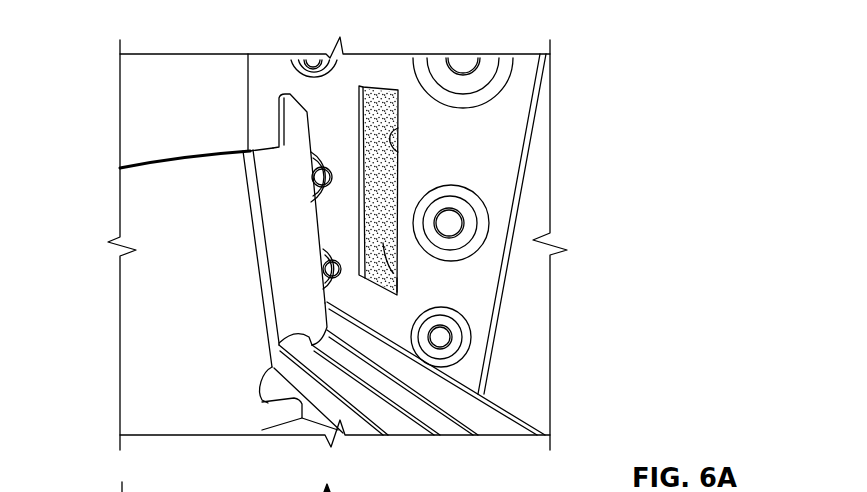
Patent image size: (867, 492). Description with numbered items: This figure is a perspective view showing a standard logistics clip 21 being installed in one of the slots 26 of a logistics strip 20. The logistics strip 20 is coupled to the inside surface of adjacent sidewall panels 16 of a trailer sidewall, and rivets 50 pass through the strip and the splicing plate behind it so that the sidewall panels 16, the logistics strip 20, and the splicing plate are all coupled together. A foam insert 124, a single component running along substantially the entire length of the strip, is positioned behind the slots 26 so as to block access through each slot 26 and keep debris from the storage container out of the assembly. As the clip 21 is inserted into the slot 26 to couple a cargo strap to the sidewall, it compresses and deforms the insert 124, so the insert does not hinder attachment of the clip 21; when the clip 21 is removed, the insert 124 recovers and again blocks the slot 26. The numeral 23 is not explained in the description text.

The sidewall panel 16 is at (522, 377).
The logistics strip 20 is at (497, 172).
The logistics clip 21 is at (273, 146).
The panel 23 is at (145, 297).
The slot 26 is at (398, 130).
The rivet 50 is at (448, 228).
The insert 124 is at (397, 278).